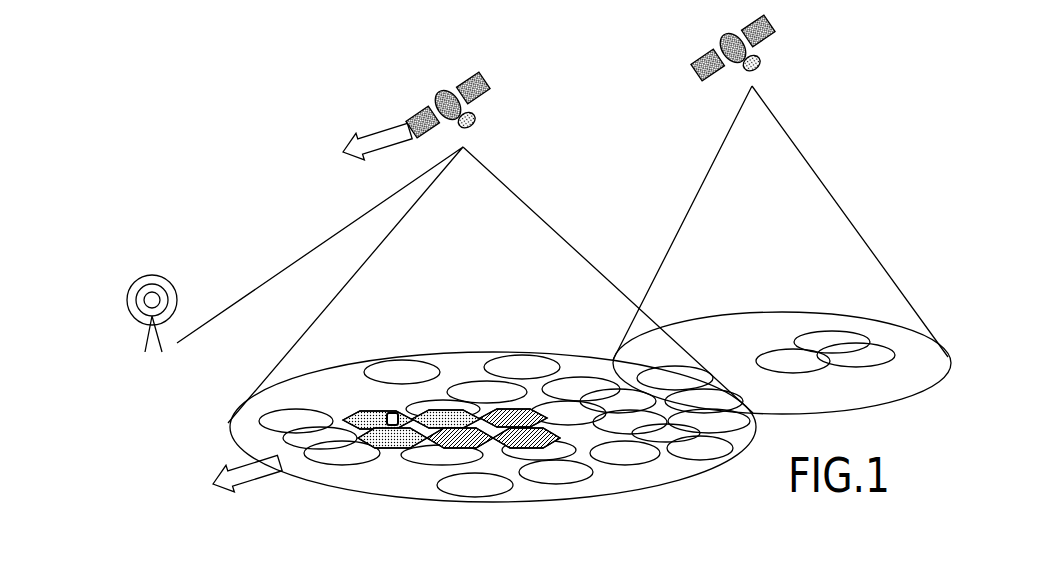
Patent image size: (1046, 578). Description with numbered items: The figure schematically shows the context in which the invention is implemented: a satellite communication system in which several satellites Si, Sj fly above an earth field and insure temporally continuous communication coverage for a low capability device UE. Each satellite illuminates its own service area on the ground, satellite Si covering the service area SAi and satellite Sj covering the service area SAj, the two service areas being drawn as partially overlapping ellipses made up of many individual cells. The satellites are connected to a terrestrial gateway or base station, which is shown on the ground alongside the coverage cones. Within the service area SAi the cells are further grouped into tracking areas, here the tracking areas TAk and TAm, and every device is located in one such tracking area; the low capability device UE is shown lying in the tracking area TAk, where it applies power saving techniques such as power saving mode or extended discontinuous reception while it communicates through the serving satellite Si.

The satellite Si is at (430, 95).
The satellite Sj is at (695, 62).
The service area SAi is at (226, 426).
The service area SAj is at (905, 387).
The tracking area TAk is at (354, 412).
The tracking area TAm is at (517, 410).
The low capability device UE is at (398, 411).